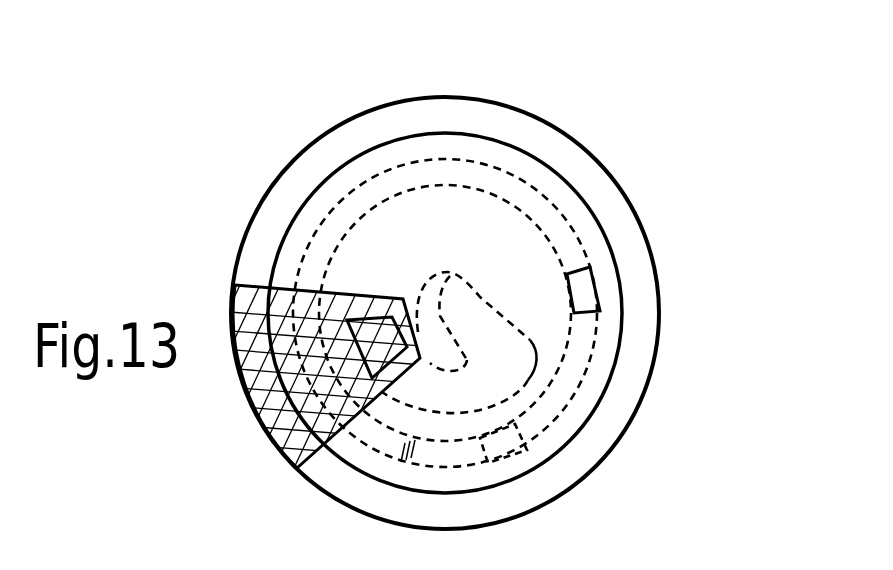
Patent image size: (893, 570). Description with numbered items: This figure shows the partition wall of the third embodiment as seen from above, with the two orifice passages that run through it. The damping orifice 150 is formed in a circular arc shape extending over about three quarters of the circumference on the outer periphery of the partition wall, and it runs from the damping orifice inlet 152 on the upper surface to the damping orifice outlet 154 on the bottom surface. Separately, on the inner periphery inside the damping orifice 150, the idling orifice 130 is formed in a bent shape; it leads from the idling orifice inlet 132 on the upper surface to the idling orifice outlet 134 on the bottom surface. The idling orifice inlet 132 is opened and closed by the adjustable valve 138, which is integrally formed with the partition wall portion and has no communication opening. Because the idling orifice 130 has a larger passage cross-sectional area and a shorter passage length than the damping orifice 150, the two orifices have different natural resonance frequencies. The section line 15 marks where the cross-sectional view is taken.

The idling orifice 130 is at (498, 340).
The idling orifice inlet 132 is at (300, 470).
The idling orifice outlet 134 is at (440, 292).
The adjustable valve 138 is at (236, 327).
The damping orifice 150 is at (353, 218).
The damping orifice inlet 152 is at (590, 293).
The damping orifice outlet 154 is at (505, 447).
The line 15— 15 is at (423, 282).